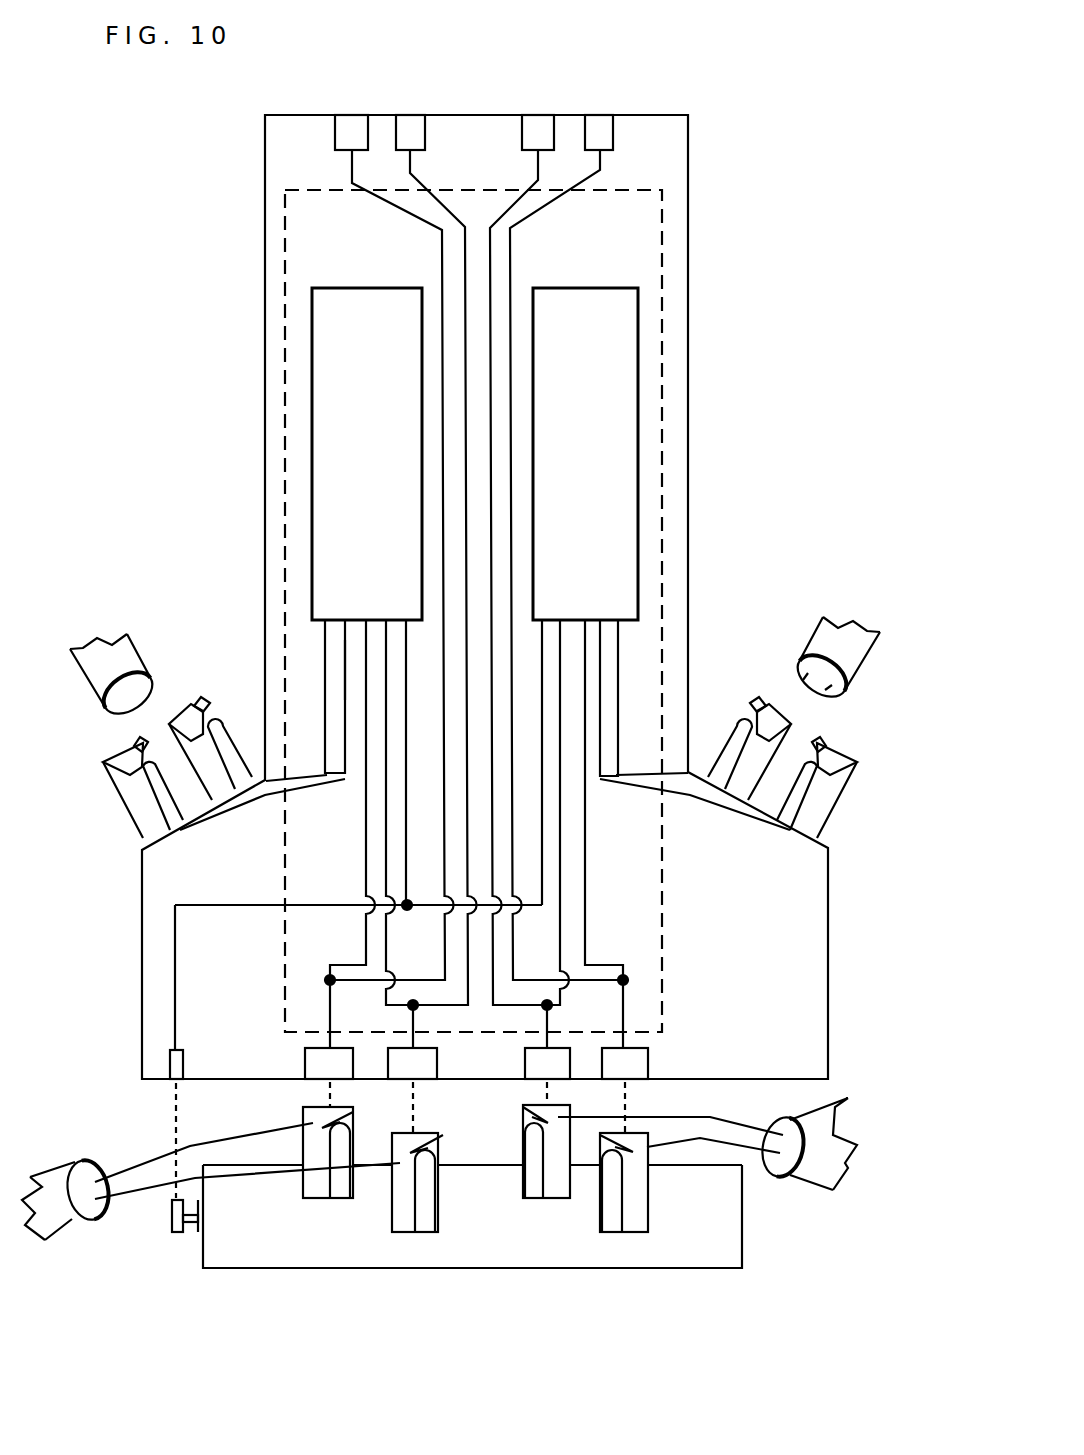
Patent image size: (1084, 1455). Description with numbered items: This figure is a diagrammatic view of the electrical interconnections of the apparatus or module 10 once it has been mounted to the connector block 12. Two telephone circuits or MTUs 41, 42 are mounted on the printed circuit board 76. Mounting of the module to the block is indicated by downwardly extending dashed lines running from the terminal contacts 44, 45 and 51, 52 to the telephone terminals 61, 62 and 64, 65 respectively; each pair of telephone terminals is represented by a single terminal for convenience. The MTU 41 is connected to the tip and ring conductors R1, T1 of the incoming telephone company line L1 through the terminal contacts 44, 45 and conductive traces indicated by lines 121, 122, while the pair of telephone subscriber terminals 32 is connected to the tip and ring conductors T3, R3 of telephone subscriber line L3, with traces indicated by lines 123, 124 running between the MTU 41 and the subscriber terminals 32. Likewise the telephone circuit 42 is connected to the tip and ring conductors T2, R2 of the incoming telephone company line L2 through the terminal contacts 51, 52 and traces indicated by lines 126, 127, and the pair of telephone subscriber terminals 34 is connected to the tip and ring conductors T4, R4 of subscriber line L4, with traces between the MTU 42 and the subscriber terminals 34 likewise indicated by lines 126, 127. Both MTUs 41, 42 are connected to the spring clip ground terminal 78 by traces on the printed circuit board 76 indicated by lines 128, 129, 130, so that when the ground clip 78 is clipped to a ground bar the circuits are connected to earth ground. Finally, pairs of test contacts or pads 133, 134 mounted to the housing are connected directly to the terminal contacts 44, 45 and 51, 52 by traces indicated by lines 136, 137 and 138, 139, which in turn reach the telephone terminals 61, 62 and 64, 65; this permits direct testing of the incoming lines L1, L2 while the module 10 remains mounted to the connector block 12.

The apparatus or module 10 is at (172, 236).
The connector block 12 is at (477, 1272).
The pair of telephone subscriber terminals 32 is at (212, 703).
The pair of telephone subscriber terminals 34 is at (723, 750).
The telephone circuit or MTU 41 is at (312, 345).
The telephone circuit or MTU 42 is at (638, 387).
The terminal contact 44 is at (318, 1070).
The terminal contact 45 is at (420, 1070).
The terminal contact 51 is at (538, 1072).
The terminal contact 52 is at (630, 1068).
The telephone terminal 61 is at (305, 1187).
The telephone terminal 62 is at (400, 1228).
The telephone terminal 64 is at (650, 1208).
The telephone terminal 65 is at (562, 1198).
The printed circuit board 76 is at (662, 249).
The spring clip ground terminal 78 is at (172, 1082).
The conductive trace 121 is at (365, 822).
The conductive trace 122 is at (383, 841).
The conductive trace 123 is at (325, 660).
The conductive trace 124 is at (345, 703).
The conductive trace 126 is at (558, 642).
The conductive trace 127 is at (582, 657).
The conductive trace 128 is at (385, 774).
The conductive trace 129 is at (542, 877).
The conductive trace 130 is at (175, 990).
The pair of test contacts or pads 133 is at (410, 113).
The pair of test contacts or pads 134 is at (598, 113).
The conductive trace 136 is at (352, 170).
The conductive trace 137 is at (412, 169).
The conductive trace 138 is at (536, 158).
The conductive trace 139 is at (600, 165).
The incoming telephone company line L1 is at (62, 1165).
The incoming telephone company line L2 is at (830, 1135).
The telephone subscriber line L3 is at (110, 633).
The telephone subscriber line L4 is at (860, 632).
The ring conductor R1 is at (163, 1150).
The ring conductor R2 is at (778, 1093).
The ring conductor R3 is at (142, 708).
The ring conductor R4 is at (770, 703).
The tip conductor T1 is at (92, 1205).
The tip conductor T2 is at (757, 1160).
The tip conductor T3 is at (132, 717).
The tip conductor T4 is at (820, 743).